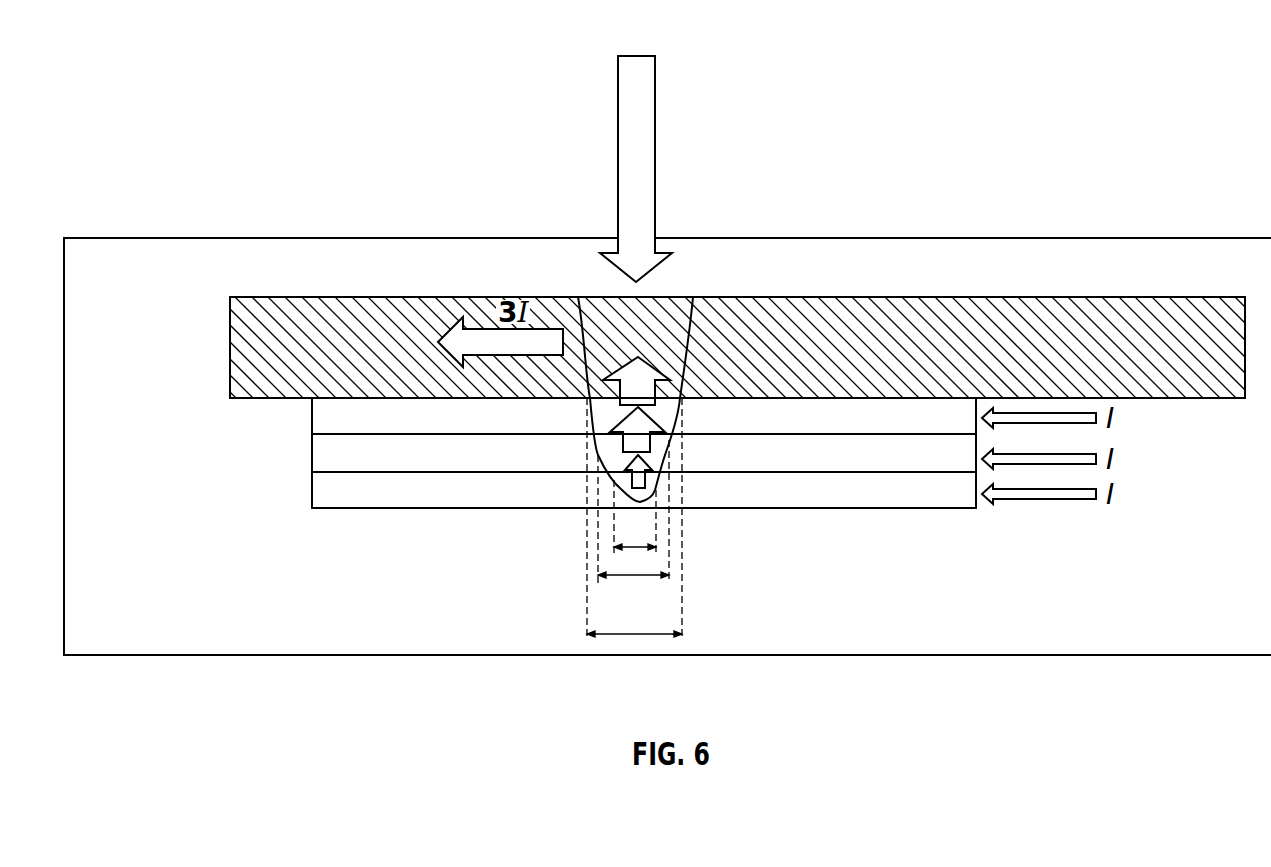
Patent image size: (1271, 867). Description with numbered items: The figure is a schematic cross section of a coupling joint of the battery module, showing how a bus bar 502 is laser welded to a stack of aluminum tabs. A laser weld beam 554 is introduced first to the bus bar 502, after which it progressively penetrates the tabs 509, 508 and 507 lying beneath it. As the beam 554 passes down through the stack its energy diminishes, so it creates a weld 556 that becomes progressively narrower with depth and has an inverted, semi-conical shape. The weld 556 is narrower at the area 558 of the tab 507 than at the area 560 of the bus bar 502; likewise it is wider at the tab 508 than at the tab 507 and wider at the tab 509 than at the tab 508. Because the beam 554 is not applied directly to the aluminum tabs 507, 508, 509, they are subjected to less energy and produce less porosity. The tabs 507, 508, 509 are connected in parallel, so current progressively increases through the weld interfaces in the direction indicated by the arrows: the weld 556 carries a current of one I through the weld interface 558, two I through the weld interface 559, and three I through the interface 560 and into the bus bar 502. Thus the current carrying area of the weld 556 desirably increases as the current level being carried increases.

The bus bar 502 is at (1173, 307).
The tab 507 is at (748, 483).
The tab 508 is at (803, 457).
The tab 509 is at (857, 410).
The laser weld beam 554 is at (655, 148).
The weld 556 is at (578, 297).
The weld interface 558 is at (630, 548).
The weld interface 559 is at (637, 575).
The weld interface 560 is at (635, 637).